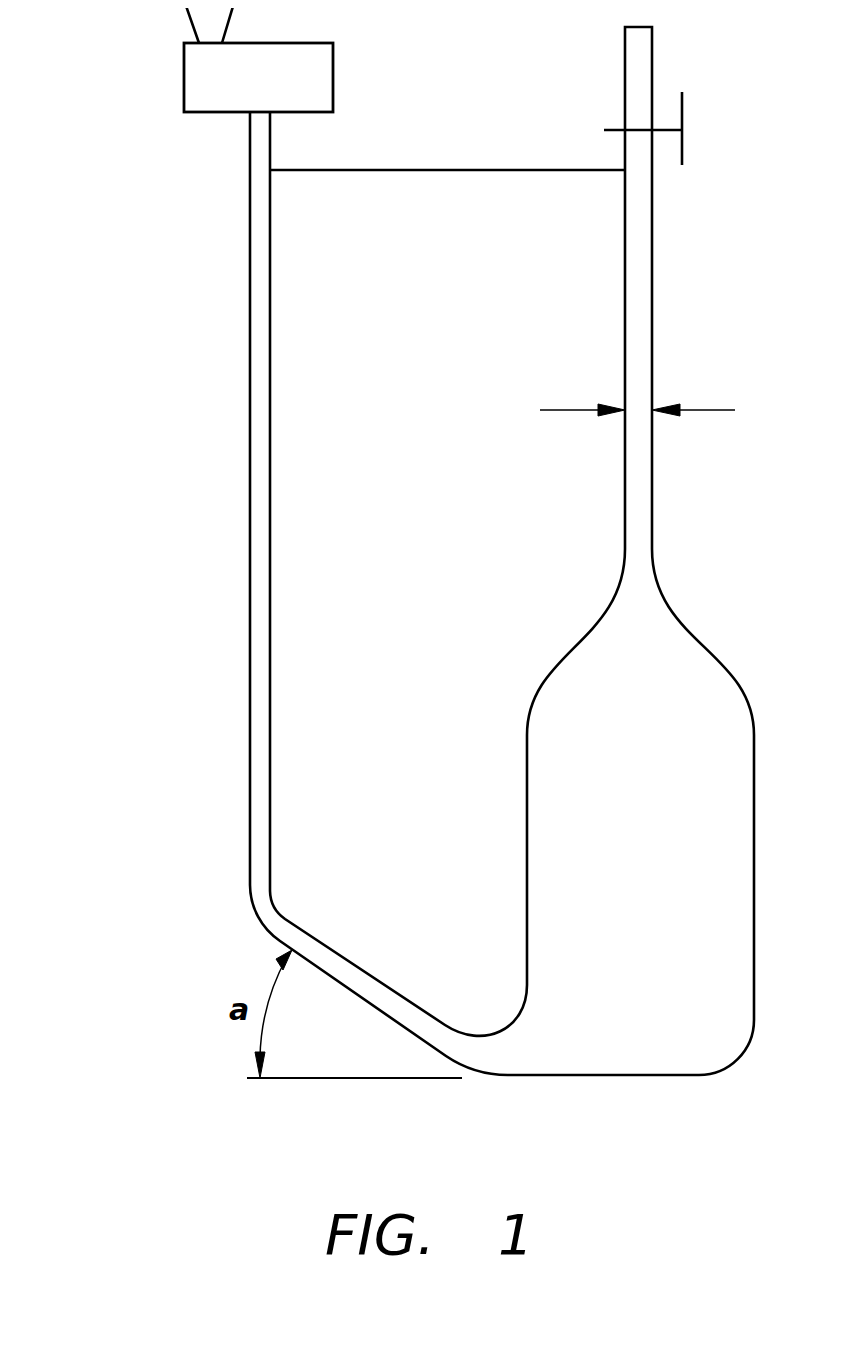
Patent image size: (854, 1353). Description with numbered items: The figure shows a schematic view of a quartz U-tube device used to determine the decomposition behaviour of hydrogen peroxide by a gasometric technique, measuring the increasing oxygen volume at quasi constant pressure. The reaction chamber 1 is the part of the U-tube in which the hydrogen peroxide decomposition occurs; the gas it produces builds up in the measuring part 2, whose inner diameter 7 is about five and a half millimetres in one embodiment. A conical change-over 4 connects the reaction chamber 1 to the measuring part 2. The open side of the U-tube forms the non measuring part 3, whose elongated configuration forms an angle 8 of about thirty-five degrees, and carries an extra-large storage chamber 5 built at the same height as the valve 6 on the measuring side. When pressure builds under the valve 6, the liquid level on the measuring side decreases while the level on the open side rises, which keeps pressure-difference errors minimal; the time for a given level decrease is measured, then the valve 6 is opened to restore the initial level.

The reaction chamber 1 is at (647, 841).
The measuring part 2 is at (651, 275).
The non measuring part 3 is at (247, 357).
The change-over 4 is at (668, 595).
The storage chamber 5 is at (182, 75).
The valve 6 is at (680, 90).
The inner diameter of the measuring part 7 is at (637, 405).
The angle 8 is at (255, 980).